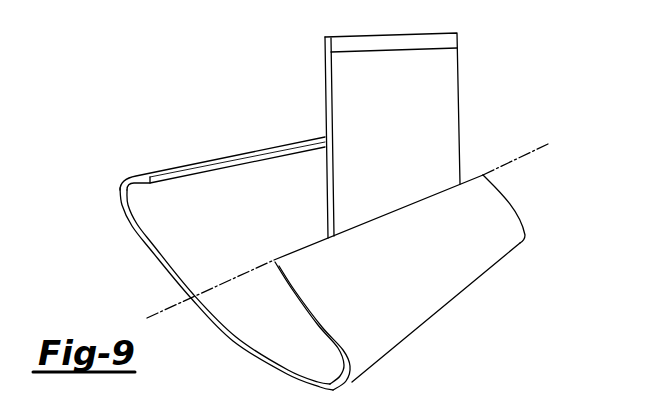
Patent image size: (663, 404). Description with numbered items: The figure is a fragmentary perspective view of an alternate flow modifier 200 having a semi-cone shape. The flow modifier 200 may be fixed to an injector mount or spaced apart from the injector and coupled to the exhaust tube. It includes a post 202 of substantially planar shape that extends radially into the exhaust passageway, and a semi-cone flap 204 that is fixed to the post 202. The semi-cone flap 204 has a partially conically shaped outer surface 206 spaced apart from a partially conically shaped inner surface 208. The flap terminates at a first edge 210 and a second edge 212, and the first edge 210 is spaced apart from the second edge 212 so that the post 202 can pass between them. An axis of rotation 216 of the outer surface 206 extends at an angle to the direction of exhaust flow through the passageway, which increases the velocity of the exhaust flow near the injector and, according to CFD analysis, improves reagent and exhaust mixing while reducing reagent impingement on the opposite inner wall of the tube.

The flow modifier 200 is at (484, 118).
The post 202 is at (447, 69).
The semi-cone flap 204 is at (460, 272).
The outer surface 206 is at (382, 342).
The inner surface 208 is at (172, 248).
The first edge 210 is at (290, 257).
The second edge 212 is at (179, 174).
The axis of rotation 216 is at (535, 148).